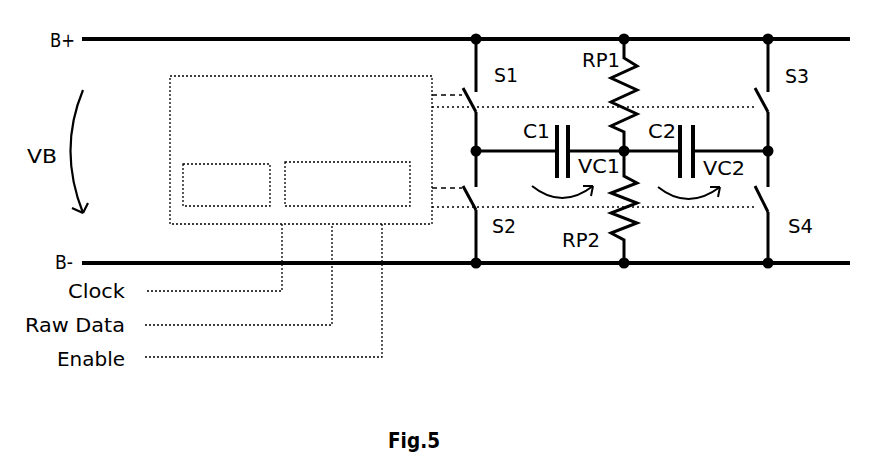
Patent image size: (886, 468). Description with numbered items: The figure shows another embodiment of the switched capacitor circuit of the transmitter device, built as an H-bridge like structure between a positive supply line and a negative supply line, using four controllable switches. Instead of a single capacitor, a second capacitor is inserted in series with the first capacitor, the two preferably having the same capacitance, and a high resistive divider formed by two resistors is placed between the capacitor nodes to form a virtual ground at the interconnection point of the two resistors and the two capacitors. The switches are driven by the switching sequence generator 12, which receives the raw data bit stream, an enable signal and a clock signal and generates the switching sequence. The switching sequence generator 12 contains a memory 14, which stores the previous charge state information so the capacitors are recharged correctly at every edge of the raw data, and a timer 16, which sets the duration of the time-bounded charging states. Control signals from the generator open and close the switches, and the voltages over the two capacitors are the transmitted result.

The switching sequence generator 12 is at (172, 92).
The memory 14 is at (395, 192).
The timer 16 is at (258, 198).